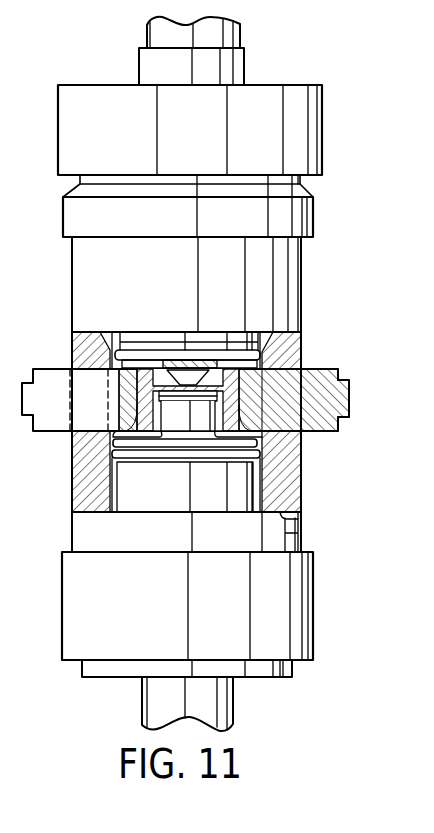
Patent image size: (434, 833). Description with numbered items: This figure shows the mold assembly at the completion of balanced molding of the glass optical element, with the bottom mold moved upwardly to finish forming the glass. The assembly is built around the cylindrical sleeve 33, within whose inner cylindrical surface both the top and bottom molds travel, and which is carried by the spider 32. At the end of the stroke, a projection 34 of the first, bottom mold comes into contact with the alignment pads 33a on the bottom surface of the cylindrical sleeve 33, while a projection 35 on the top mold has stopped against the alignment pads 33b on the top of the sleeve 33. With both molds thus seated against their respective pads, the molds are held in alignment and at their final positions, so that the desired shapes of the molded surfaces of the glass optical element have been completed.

The spider 32 is at (339, 371).
The cylindrical sleeve 33 is at (288, 466).
The alignment pads 33a is at (296, 515).
The alignment pads 33b is at (278, 333).
The projection 34 is at (301, 530).
The projection 35 is at (285, 331).